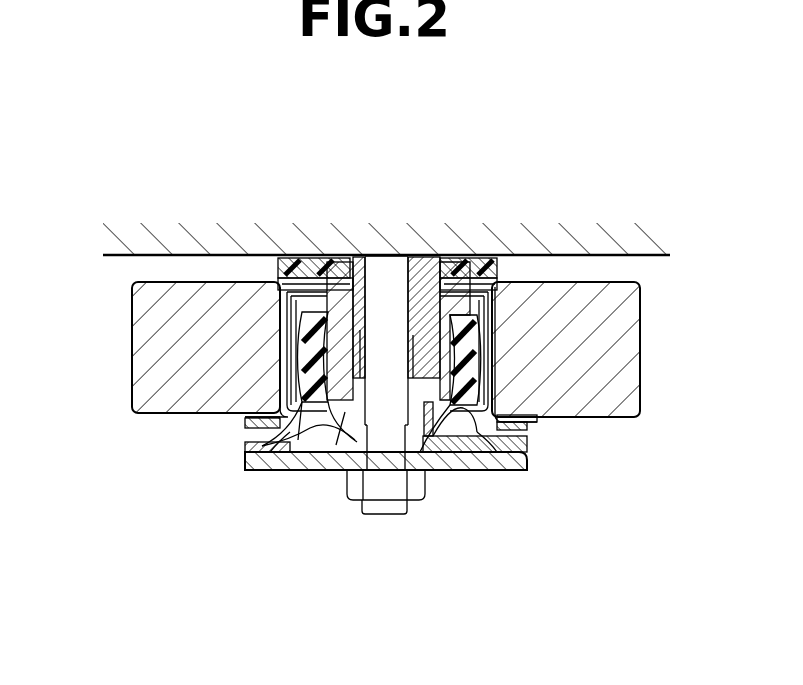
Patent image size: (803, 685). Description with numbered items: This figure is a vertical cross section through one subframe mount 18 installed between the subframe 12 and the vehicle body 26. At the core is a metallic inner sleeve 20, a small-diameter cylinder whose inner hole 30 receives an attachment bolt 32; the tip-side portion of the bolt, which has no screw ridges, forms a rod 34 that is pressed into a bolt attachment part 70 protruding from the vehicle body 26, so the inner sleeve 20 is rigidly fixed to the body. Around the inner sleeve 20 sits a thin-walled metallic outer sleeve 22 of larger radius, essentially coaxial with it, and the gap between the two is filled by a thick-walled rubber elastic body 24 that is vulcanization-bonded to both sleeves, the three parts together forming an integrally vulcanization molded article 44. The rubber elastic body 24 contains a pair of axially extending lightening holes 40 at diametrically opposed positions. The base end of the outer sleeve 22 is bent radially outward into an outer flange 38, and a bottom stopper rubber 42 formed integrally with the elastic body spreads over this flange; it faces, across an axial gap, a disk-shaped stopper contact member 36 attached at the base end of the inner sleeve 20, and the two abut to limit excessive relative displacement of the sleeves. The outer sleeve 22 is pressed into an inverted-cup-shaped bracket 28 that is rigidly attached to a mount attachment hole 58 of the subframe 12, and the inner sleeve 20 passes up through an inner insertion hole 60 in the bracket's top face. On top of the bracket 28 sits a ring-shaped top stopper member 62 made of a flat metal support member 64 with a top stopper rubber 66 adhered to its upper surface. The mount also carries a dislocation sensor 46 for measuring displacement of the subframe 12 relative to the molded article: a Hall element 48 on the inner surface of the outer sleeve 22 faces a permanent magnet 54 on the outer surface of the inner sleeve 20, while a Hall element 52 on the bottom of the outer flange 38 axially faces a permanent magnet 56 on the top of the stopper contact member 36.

The subframe 12 is at (143, 373).
The subframe mount 18 is at (498, 494).
The inner sleeve 20 is at (316, 458).
The outer sleeve 22 is at (495, 300).
The rubber elastic body 24 is at (452, 472).
The vehicle body 26 is at (403, 213).
The bracket 28 is at (278, 300).
The inner hole 30 is at (338, 450).
The attachment bolt 32 is at (383, 508).
The rod 34 is at (390, 274).
The stopper contact member 36 is at (272, 465).
The outer flange 38 is at (517, 433).
The lightening hole 40 is at (243, 463).
The bottom stopper rubber 42 is at (496, 477).
The integrally vulcanization molded article 44 is at (300, 467).
The dislocation sensor 46 is at (152, 420).
The Hall element 48 is at (475, 470).
The Hall element 52 is at (245, 427).
The permanent magnet 54 is at (440, 470).
The permanent magnet 56 is at (247, 450).
The mount attachment hole 58 is at (572, 325).
The inner insertion hole 60 is at (330, 278).
The top stopper member 62 is at (273, 258).
The support member 64 is at (520, 272).
The top stopper rubber 66 is at (497, 274).
The bolt attachment part 70 is at (347, 274).